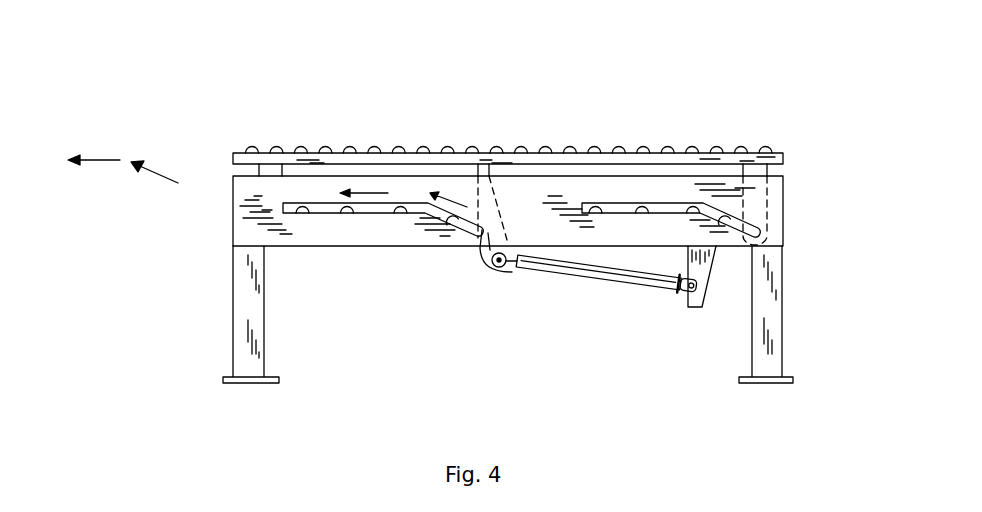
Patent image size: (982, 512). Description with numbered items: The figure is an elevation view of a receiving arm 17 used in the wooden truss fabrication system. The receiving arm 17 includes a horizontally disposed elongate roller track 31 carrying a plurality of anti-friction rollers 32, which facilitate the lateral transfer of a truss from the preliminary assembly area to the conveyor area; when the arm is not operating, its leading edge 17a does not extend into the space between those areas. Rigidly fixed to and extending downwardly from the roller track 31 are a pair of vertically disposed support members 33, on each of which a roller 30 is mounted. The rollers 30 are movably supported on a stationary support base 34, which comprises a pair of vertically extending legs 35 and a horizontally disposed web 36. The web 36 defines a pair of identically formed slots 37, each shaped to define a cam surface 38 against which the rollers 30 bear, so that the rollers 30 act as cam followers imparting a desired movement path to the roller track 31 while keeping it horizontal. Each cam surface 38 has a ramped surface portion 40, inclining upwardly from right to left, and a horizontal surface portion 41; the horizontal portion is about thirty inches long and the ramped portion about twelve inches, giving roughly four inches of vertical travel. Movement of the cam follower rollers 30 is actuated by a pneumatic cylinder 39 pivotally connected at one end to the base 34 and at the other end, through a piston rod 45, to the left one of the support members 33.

The receiving arm 17 is at (498, 106).
The leading edge 17a is at (232, 158).
The roller 30 is at (485, 237).
The roller track 31 is at (632, 158).
The anti-friction rollers 32 is at (325, 150).
The support members 33 is at (477, 175).
The support base 34 is at (245, 234).
The legs 35 is at (258, 316).
The web 36 is at (338, 240).
The slots 37 is at (347, 209).
The cam surface 38 is at (403, 210).
The pneumatic cylinder 39 is at (582, 272).
The ramped surface portion 40 is at (450, 222).
The horizontal surface portion 41 is at (308, 210).
The piston rod 45 is at (508, 270).